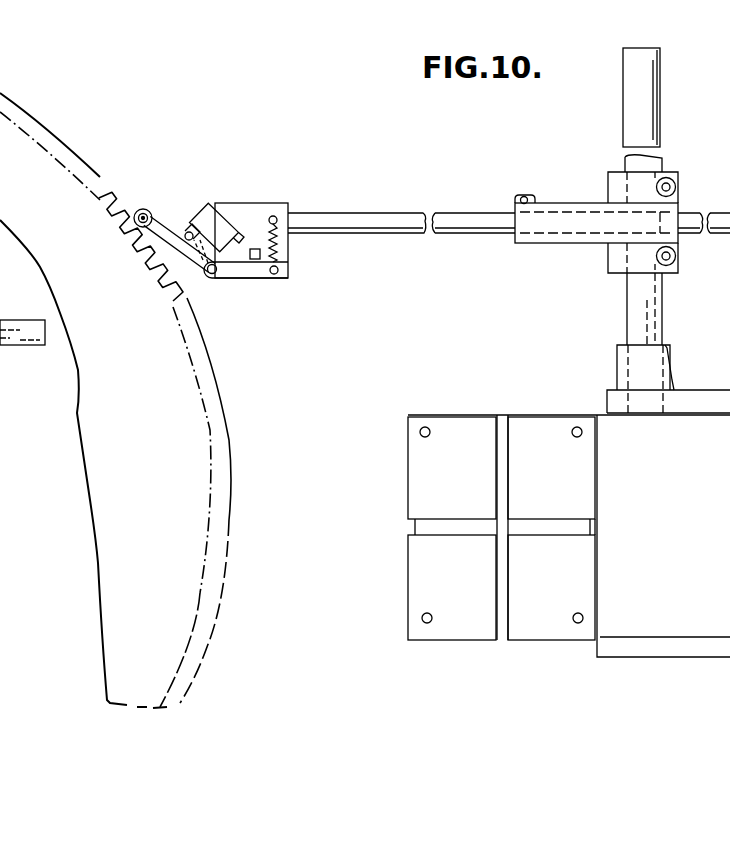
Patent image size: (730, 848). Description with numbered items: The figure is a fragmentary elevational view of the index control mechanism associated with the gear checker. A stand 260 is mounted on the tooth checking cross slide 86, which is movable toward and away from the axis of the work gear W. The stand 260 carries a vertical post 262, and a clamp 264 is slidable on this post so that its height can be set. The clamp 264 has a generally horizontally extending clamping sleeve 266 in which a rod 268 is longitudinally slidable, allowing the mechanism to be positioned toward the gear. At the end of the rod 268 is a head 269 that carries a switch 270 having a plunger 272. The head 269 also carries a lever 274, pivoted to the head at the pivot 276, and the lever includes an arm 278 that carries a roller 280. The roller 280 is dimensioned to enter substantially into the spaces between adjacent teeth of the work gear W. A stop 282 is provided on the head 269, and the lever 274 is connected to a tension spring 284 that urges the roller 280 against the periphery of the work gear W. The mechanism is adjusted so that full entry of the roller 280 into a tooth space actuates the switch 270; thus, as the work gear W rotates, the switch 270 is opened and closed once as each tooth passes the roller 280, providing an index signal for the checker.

The work gear W is at (223, 413).
The roller 280 is at (146, 200).
The arm 278 is at (175, 222).
The plunger 272 is at (188, 234).
The switch 270 is at (223, 213).
The head 269 is at (285, 203).
The pivot 276 is at (211, 275).
The lever 274 is at (252, 279).
The stop 282 is at (254, 247).
The tension spring 284 is at (283, 250).
The rod 268 is at (402, 234).
The clamping sleeve 266 is at (578, 203).
The clamp 264 is at (607, 267).
The vertical post 262 is at (659, 123).
The stand 260 is at (687, 390).
The cross slide 86 is at (552, 414).